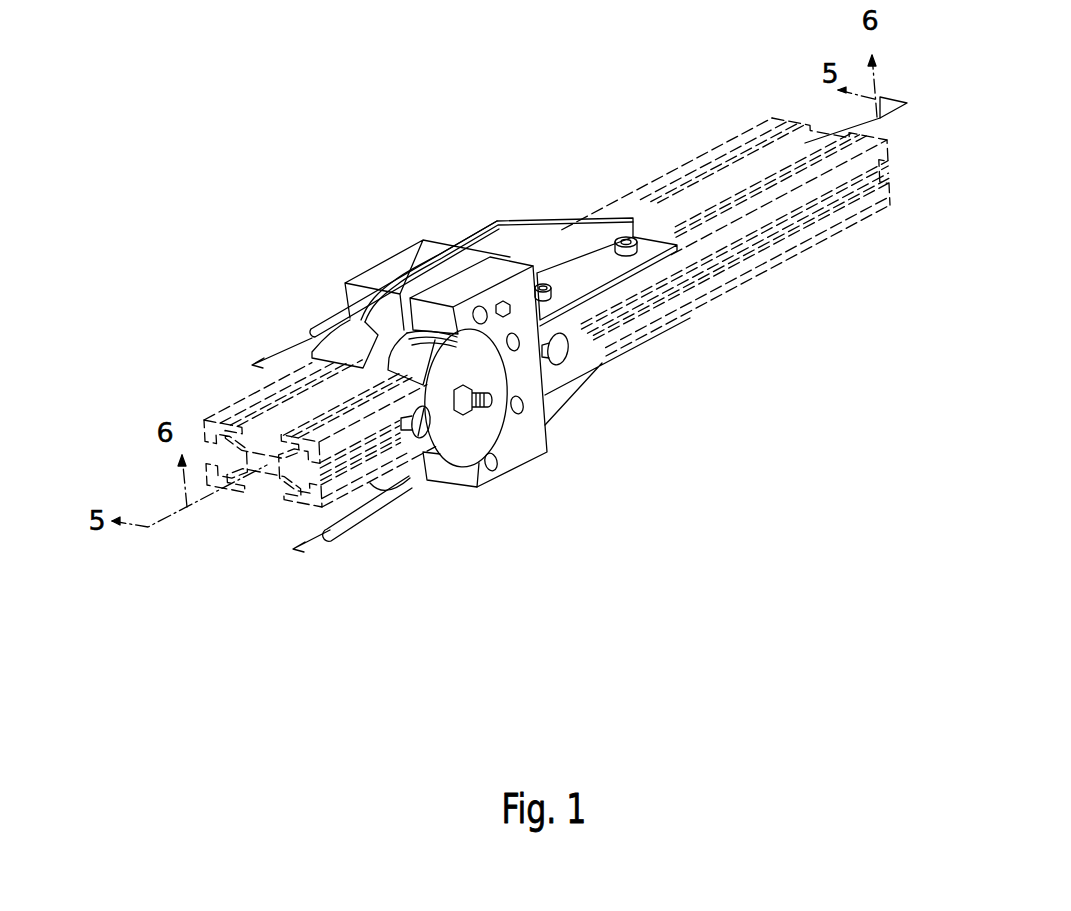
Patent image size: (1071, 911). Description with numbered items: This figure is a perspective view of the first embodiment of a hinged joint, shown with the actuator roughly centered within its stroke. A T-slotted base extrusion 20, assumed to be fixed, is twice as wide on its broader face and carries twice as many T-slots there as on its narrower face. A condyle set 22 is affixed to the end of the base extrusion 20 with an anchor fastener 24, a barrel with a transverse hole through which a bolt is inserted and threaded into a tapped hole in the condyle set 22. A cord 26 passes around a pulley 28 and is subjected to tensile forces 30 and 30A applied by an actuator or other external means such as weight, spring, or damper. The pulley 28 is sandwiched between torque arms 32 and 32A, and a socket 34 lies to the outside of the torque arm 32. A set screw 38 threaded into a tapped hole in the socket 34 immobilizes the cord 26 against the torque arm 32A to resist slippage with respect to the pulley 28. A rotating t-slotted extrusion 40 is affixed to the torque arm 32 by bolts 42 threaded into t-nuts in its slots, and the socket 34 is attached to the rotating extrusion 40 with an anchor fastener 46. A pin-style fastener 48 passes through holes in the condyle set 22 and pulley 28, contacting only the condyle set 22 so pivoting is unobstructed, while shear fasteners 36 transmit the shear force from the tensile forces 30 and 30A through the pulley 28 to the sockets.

The T-slotted base extrusion 20 is at (262, 480).
The condyle set 22 is at (455, 423).
The anchor fastener 24 is at (422, 420).
The cord 26 is at (353, 313).
The pulley 28 is at (367, 313).
The tensile force 30 is at (266, 358).
The tensile force 30A is at (333, 529).
The torque arm 32 is at (520, 252).
The torque arm 32A is at (460, 268).
The socket 34 is at (520, 445).
The shear fastener 36 is at (536, 266).
The set screw 38 is at (501, 302).
The rotating t-slotted extrusion 40 is at (743, 158).
The bolt 42 is at (640, 250).
The anchor fastener 46 is at (568, 347).
The pin-style fastener 48 is at (487, 407).